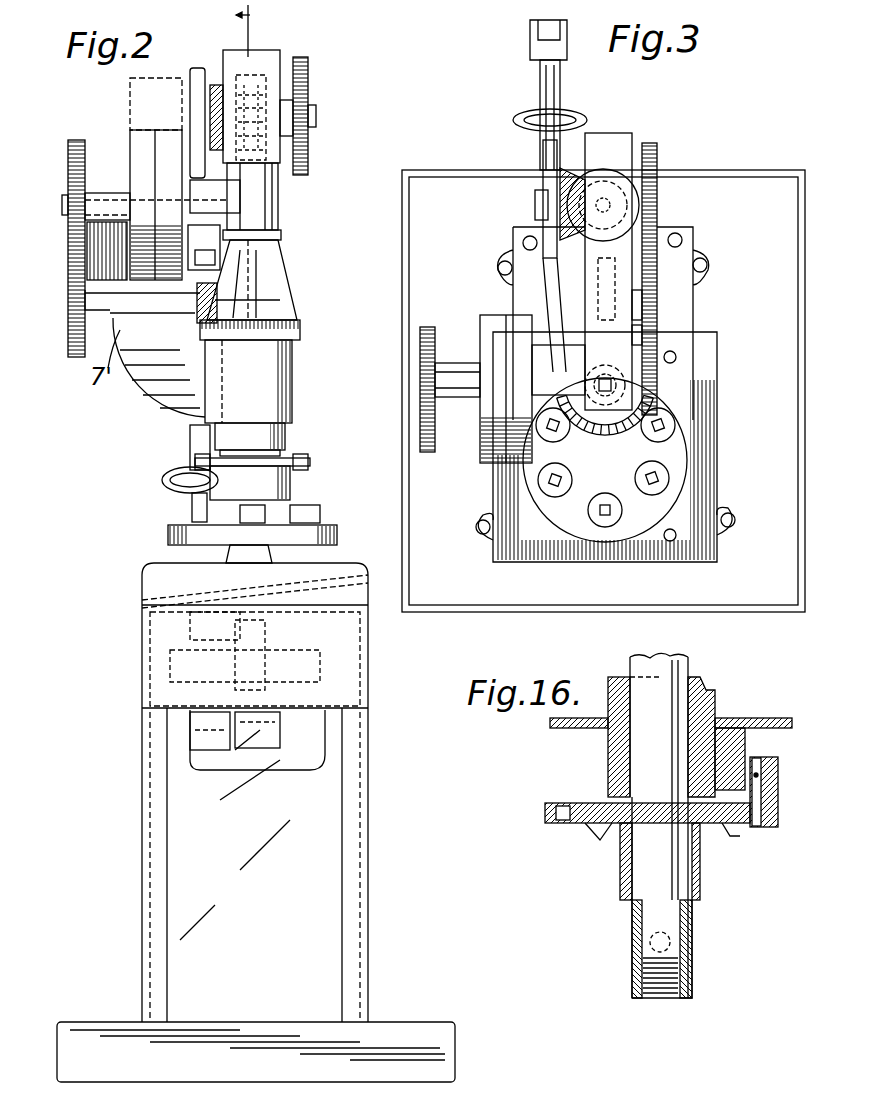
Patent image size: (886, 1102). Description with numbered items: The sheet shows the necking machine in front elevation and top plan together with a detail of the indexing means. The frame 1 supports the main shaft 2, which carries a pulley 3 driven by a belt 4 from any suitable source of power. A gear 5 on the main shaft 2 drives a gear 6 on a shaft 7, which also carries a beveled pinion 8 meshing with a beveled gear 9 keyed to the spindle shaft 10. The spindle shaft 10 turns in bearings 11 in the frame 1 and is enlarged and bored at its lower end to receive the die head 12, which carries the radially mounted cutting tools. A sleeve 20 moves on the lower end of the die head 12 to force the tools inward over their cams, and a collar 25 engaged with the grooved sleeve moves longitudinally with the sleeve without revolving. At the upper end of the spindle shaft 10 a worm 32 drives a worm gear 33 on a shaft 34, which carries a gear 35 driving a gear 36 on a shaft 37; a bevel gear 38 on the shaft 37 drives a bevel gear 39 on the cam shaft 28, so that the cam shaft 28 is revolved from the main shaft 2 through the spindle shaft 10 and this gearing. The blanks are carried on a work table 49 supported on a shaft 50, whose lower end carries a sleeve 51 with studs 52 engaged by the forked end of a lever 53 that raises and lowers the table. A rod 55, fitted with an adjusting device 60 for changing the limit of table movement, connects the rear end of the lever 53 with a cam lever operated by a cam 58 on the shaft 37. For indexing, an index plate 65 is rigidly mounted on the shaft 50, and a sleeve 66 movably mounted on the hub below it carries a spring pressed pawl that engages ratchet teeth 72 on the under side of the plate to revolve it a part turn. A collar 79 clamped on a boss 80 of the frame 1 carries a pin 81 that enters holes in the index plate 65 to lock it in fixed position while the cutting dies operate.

In FIG. 2, the frame 1 is at (368, 772).
In FIG. 3, the frame 1 is at (590, 560).
In FIG. 16, the frame 1 is at (760, 720).
In FIG. 2, the main shaft 2 is at (64, 210).
In FIG. 2, the pulley 3 is at (130, 153).
In FIG. 3, the pulley 3 is at (488, 328).
In FIG. 2, the belt 4 is at (132, 110).
In FIG. 2, the gear 5 is at (68, 164).
In FIG. 3, the gear 5 is at (428, 327).
In FIG. 2, the gear 6 is at (76, 350).
In FIG. 2, the shaft 7 is at (48, 330).
In FIG. 2, the beveled pinion 8 is at (225, 300).
In FIG. 2, the beveled gear 9 is at (300, 327).
In FIG. 3, the beveled gear 9 is at (614, 430).
In FIG. 2, the spindle shaft 10 is at (264, 262).
In FIG. 2, the bearings 11 is at (280, 202).
In FIG. 2, the die head 12 is at (285, 452).
In FIG. 2, the sleeve 20 is at (290, 486).
In FIG. 2, the collar 25 is at (308, 462).
In FIG. 3, the cam shaft 28 is at (612, 200).
In FIG. 2, the worm 32 is at (265, 90).
In FIG. 3, the worm 32 is at (628, 388).
In FIG. 3, the worm gear 33 is at (640, 285).
In FIG. 2, the shaft 34 is at (316, 117).
In FIG. 3, the shaft 34 is at (665, 305).
In FIG. 2, the gear 35 is at (308, 78).
In FIG. 3, the gear 35 is at (665, 268).
In FIG. 3, the gear 36 is at (660, 150).
In FIG. 3, the shaft 37 is at (535, 205).
In FIG. 3, the bevel gear 38 is at (566, 206).
In FIG. 3, the bevel gear 39 is at (605, 200).
In FIG. 2, the work table 49 is at (168, 533).
In FIG. 3, the work table 49 is at (676, 453).
In FIG. 2, the shaft 50 is at (276, 556).
In FIG. 16, the shaft 50 is at (660, 910).
In FIG. 16, the sleeve 51 is at (690, 968).
In FIG. 16, the studs 52 is at (672, 942).
In FIG. 2, the lever 53 is at (258, 748).
In FIG. 3, the lever 53 is at (566, 30).
In FIG. 2, the rod 55 is at (195, 427).
In FIG. 2, the cam 58 is at (197, 68).
In FIG. 3, the cam 58 is at (546, 180).
In FIG. 2, the adjusting device 60 is at (170, 476).
In FIG. 3, the adjusting device 60 is at (530, 118).
In FIG. 16, the index plate 65 is at (552, 820).
In FIG. 16, the sleeve 66 is at (702, 860).
In FIG. 16, the ratchet teeth 72 is at (598, 838).
In FIG. 16, the collar 79 is at (612, 778).
In FIG. 16, the boss 80 is at (628, 752).
In FIG. 16, the pin 81 is at (765, 828).